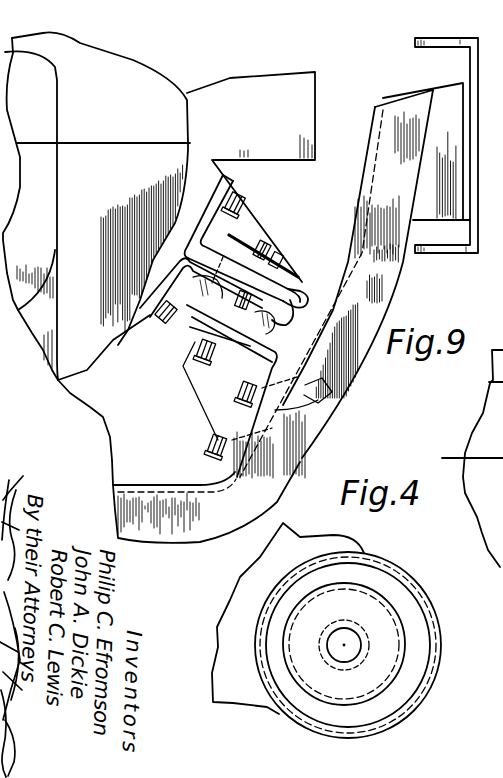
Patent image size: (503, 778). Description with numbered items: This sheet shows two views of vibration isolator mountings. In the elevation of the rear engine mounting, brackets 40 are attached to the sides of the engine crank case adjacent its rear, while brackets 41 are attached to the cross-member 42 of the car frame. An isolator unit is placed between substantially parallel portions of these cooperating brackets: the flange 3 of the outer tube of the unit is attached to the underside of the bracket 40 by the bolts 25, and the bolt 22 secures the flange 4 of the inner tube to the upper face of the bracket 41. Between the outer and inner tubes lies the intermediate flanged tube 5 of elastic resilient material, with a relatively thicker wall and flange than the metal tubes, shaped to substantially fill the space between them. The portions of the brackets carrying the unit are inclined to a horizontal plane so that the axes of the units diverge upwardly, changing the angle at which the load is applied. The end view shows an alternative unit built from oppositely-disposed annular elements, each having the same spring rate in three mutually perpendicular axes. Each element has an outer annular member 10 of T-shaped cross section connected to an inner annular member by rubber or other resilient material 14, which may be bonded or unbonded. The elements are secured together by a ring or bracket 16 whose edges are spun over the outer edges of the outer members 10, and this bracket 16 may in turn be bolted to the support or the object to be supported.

In FIG. 9, the bracket 40 is at (250, 224).
In FIG. 9, the bolt 22 is at (263, 253).
In FIG. 9, the flange 3 is at (277, 313).
In FIG. 9, the flange 4 is at (258, 335).
In FIG. 9, the bolts 25 is at (238, 300).
In FIG. 9, the intermediate flanged tube 5 is at (197, 356).
In FIG. 9, the cross-member 42 is at (328, 397).
In FIG. 9, the bracket 41 is at (320, 425).
In FIG. 4, the resilient material 14 is at (373, 582).
In FIG. 4, the ring or bracket 16 is at (288, 618).
In FIG. 4, the outer annular member 10 is at (356, 652).